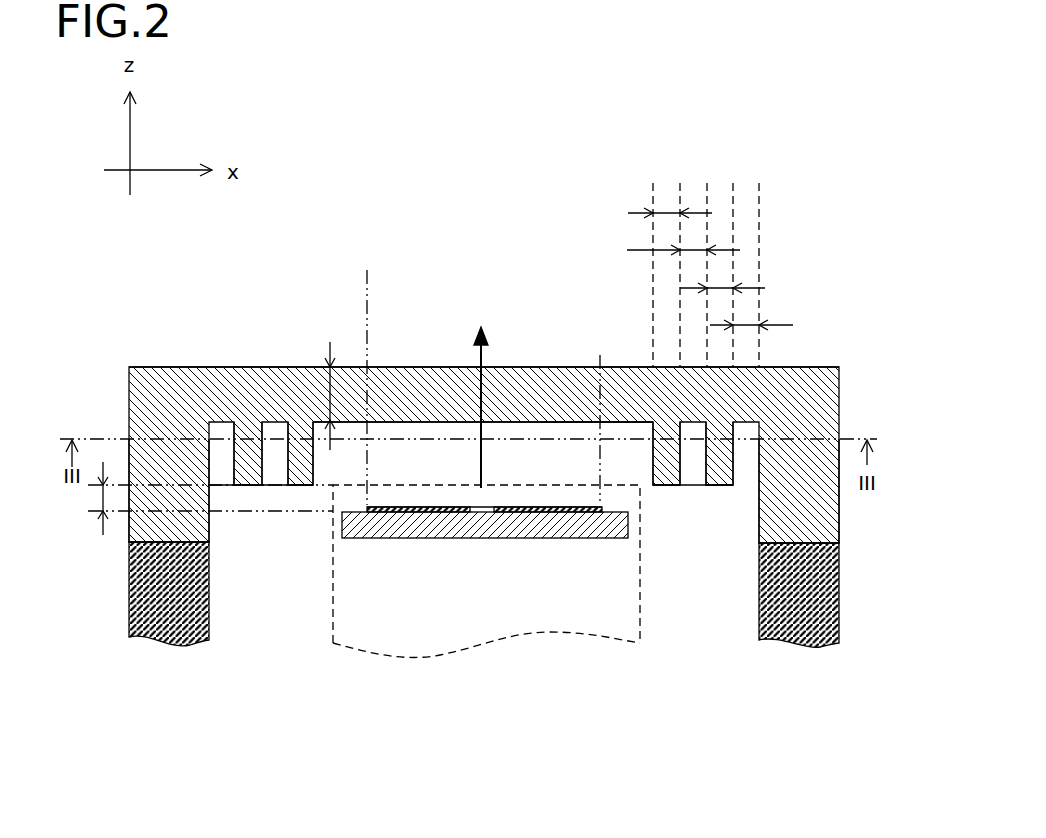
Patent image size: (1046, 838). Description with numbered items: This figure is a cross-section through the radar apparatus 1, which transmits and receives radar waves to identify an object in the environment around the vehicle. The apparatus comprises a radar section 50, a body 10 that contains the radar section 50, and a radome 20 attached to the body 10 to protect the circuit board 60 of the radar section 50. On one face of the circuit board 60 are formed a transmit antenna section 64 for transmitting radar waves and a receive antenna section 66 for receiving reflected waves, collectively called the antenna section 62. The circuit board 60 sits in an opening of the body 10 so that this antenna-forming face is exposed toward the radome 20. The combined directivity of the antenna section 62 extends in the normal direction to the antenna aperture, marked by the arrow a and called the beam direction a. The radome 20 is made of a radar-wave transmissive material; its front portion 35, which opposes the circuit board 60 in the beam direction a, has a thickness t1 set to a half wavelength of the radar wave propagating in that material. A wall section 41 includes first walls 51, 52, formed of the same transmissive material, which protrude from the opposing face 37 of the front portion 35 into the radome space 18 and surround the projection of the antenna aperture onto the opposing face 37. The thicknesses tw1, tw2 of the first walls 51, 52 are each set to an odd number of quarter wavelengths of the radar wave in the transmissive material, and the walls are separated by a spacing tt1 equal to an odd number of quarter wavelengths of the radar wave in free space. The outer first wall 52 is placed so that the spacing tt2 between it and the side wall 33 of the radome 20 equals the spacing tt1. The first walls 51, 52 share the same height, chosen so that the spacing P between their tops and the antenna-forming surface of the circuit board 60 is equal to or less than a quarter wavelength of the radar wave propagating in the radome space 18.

The radar apparatus 1 is at (434, 194).
The body 10 is at (130, 630).
The radome space 18 is at (577, 423).
The radome 20 is at (145, 367).
The side wall 33 is at (140, 531).
The front portion 35 is at (402, 380).
The opposing face 37 is at (445, 421).
The wall section 41 is at (312, 588).
The first wall 51 is at (291, 487).
The first wall 52 is at (252, 487).
The radar section 50 is at (513, 635).
The circuit board 60 is at (387, 538).
The antenna section 62 is at (445, 576).
The transmit antenna section 64 is at (418, 511).
The receive antenna section 66 is at (537, 511).
The spacing P is at (103, 486).
The thickness t1 is at (329, 358).
The thickness tw1 is at (665, 213).
The spacing tt1 is at (692, 250).
The thickness tw2 is at (720, 288).
The spacing tt2 is at (746, 325).
The beam direction a is at (484, 345).